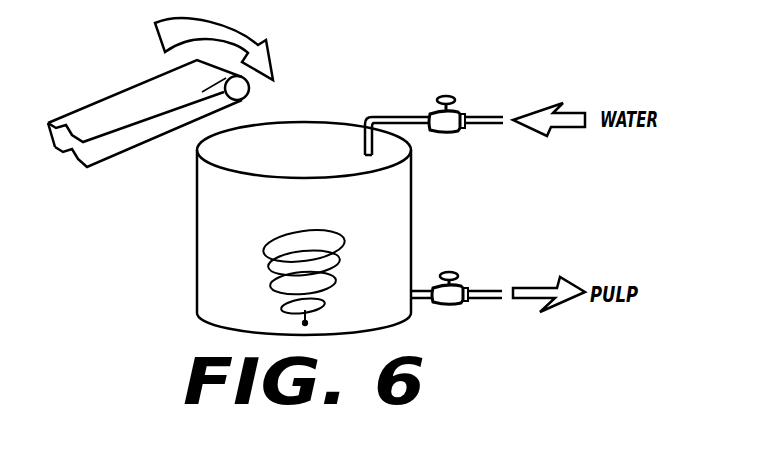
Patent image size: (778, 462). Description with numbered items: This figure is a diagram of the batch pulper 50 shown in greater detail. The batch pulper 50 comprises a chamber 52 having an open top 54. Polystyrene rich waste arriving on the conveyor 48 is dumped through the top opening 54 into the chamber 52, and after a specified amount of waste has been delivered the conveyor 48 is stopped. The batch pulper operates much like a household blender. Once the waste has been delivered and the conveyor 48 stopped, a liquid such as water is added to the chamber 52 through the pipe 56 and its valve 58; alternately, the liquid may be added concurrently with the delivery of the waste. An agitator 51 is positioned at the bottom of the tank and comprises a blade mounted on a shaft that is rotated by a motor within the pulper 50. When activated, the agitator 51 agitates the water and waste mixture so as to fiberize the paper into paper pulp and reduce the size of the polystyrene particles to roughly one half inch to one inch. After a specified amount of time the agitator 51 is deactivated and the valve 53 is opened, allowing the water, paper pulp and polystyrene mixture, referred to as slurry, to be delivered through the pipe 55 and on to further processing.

The conveyor 48 is at (128, 138).
The batch pulper 50 is at (398, 29).
The agitator 51 is at (271, 280).
The chamber 52 is at (198, 235).
The valve 53 is at (450, 272).
The open top 54 is at (306, 121).
The pipe 55 is at (487, 290).
The pipe 56 is at (488, 117).
The valve 58 is at (458, 110).